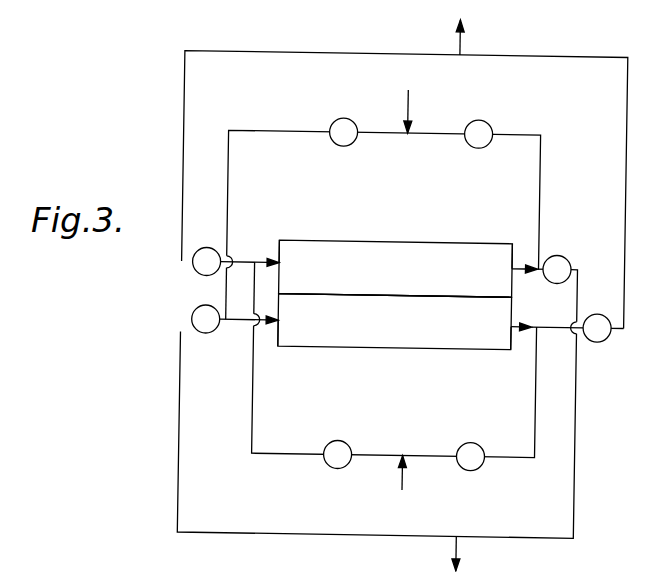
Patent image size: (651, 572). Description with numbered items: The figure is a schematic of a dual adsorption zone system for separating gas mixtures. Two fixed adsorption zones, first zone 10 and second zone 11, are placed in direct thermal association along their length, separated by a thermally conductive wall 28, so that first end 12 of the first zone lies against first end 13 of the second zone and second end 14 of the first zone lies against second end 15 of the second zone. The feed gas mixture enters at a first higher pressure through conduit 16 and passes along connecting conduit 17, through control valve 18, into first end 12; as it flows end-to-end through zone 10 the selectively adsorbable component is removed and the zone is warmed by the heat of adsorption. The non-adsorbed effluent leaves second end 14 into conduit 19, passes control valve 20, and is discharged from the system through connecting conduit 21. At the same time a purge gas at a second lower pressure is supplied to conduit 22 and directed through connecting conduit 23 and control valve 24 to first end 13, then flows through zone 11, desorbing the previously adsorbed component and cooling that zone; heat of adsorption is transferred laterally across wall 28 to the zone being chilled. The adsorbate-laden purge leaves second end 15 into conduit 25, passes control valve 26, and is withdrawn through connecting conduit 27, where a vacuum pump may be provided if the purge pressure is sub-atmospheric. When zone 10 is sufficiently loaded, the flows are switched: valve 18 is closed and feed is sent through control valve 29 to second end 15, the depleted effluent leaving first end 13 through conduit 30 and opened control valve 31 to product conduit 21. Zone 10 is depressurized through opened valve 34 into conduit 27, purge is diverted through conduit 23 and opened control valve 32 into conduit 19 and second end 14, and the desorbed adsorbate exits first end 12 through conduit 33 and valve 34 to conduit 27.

The first adsorption zone 10 is at (436, 247).
The second adsorption zone 11 is at (435, 340).
The first end of first zone 12 is at (282, 262).
The first end of second zone 13 is at (283, 322).
The second end of first zone 14 is at (506, 269).
The second end of second zone 15 is at (508, 325).
The feed conduit 16 is at (398, 480).
The connecting conduit 17 is at (288, 456).
The control valve 18 is at (333, 469).
The effluent conduit 19 is at (528, 271).
The control valve 20 is at (562, 258).
The connecting product conduit 21 is at (463, 548).
The purge gas conduit 22 is at (412, 107).
The connecting conduit 23 is at (376, 135).
The control valve 24 is at (344, 118).
The purge discharge conduit 25 is at (559, 330).
The control valve 26 is at (600, 341).
The connecting conduit 27 is at (463, 46).
The thermally conductive wall 28 is at (355, 297).
The control valve 29 is at (470, 469).
The conduit 30 is at (234, 321).
The control valve 31 is at (208, 333).
The control valve 32 is at (490, 128).
The conduit 33 is at (243, 258).
The control valve 34 is at (196, 268).